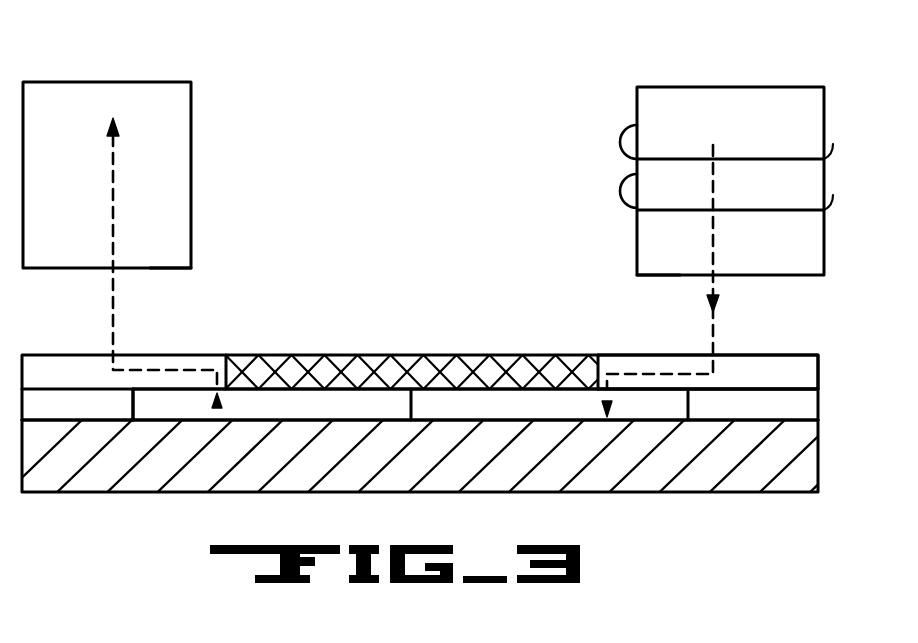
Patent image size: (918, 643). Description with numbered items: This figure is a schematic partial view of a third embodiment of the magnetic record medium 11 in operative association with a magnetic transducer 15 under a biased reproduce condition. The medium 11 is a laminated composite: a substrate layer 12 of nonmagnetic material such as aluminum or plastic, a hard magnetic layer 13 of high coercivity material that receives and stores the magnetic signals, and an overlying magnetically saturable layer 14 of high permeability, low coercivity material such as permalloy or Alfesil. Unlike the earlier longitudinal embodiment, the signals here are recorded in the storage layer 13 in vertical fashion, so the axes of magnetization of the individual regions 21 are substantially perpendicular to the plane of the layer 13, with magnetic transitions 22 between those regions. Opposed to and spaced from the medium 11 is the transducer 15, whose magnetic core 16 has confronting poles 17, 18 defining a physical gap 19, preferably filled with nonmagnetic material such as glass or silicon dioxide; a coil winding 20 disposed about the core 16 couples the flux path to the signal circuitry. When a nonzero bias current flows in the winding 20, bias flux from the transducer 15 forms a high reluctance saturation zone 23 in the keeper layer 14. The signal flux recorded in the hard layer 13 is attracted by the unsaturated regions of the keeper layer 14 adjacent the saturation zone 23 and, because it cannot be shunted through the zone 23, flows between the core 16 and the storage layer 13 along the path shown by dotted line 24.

The magnetic record medium 11 is at (205, 355).
The substrate layer 12 is at (662, 492).
The hard magnetic layer 13 is at (65, 395).
The magnetically saturable layer 14 is at (662, 363).
The magnetic transducer 15 is at (537, 97).
The magnetic core 16 is at (82, 176).
The pole 17 is at (648, 275).
The pole 18 is at (175, 268).
The physical gap 19 is at (410, 201).
The coil winding 20 is at (620, 193).
The regions 21 is at (181, 405).
The magnetic transition 22 is at (133, 398).
The saturation zone 23 is at (478, 375).
The signal flux path 24 is at (113, 230).